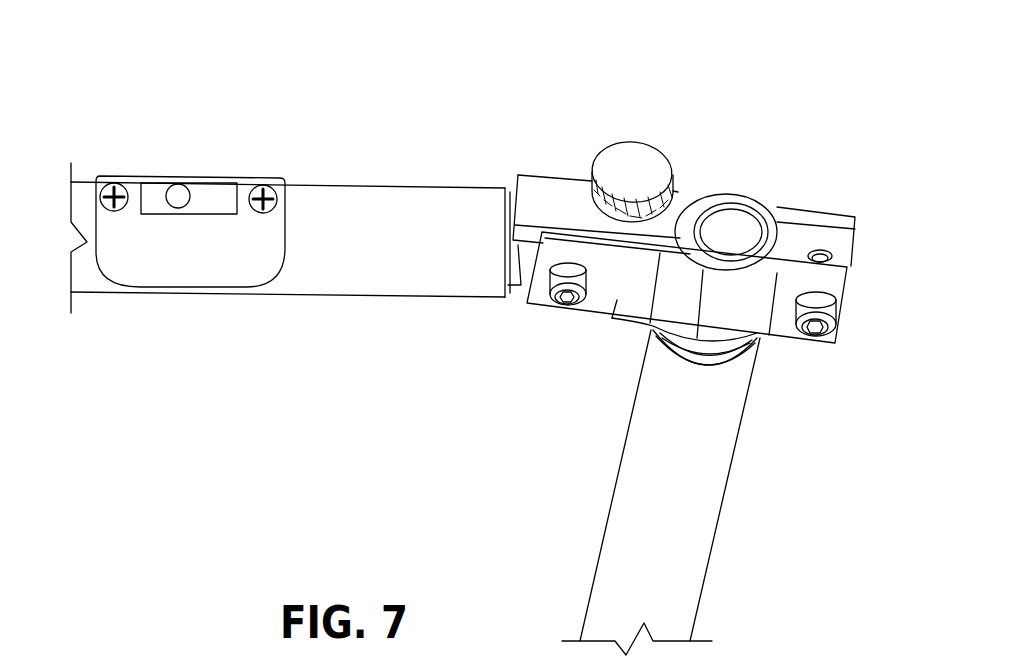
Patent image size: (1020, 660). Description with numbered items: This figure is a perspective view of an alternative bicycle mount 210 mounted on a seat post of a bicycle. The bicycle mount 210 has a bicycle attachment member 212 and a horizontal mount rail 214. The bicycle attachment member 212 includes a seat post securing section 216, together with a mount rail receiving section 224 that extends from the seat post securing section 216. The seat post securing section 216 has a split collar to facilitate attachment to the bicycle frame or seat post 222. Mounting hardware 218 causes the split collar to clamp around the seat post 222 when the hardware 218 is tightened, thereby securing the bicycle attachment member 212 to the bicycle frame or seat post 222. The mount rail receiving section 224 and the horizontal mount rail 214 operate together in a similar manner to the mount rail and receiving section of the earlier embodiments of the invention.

The bicycle mount 210 is at (722, 203).
The bicycle attachment member 212 is at (797, 193).
The horizontal mount rail 214 is at (387, 180).
The seat post securing section 216 is at (745, 318).
The mounting hardware 218 is at (823, 308).
The seat post 222 is at (707, 517).
The mount rail receiving section 224 is at (614, 302).